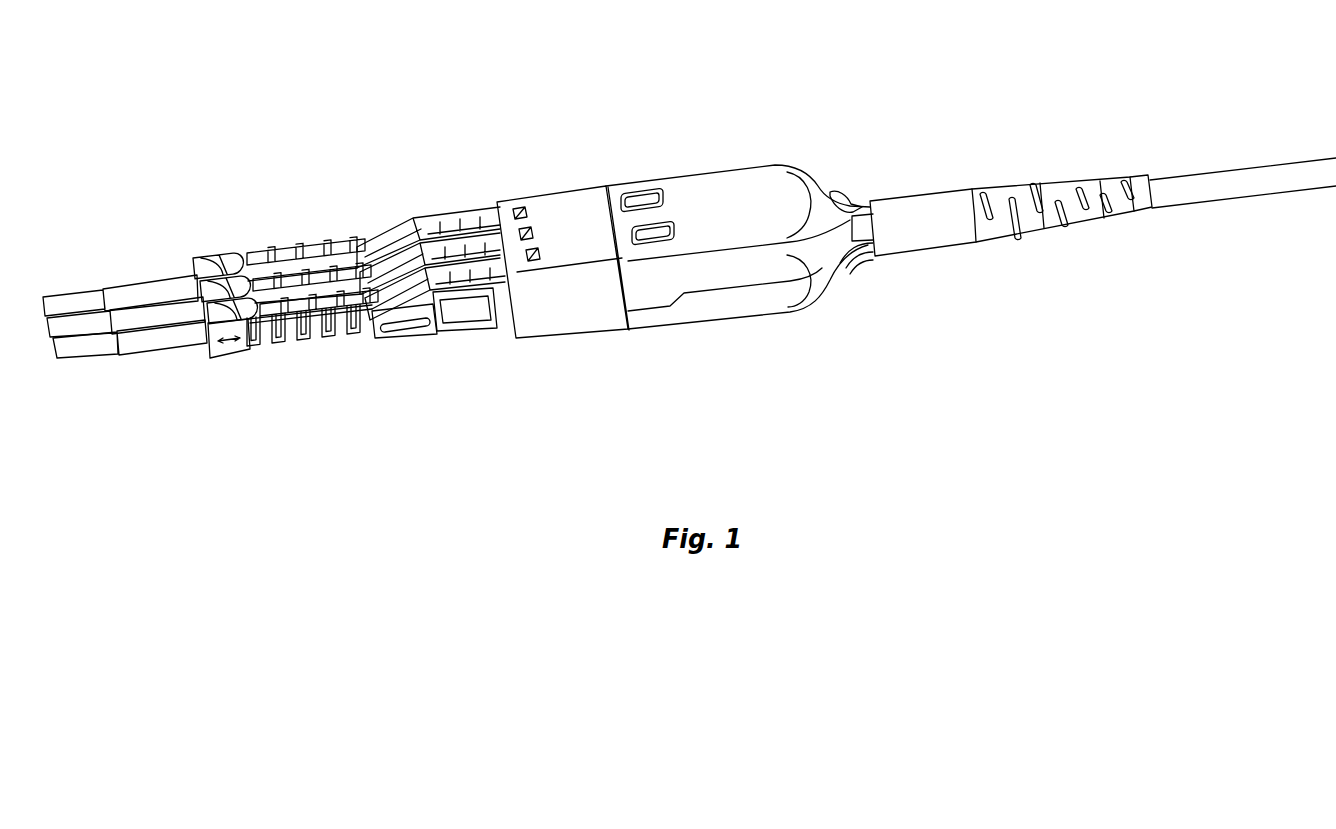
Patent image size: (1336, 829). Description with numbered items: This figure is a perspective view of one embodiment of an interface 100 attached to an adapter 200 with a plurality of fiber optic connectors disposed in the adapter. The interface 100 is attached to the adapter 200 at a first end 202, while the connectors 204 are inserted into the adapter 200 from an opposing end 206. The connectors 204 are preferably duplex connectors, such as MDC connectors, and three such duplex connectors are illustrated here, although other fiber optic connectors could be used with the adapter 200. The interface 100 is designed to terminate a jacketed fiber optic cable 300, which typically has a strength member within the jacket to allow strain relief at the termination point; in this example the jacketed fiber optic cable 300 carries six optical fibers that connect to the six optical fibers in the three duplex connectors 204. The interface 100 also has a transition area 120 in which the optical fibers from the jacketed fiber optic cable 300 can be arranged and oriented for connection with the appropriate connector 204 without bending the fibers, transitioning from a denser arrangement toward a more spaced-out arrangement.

The interface 100 is at (780, 98).
The transition area 120 is at (862, 286).
The adapter 200 is at (576, 326).
The first end 202 is at (626, 334).
The connectors 204 is at (427, 214).
The opposing end 206 is at (516, 340).
The jacketed fiber optic cable 300 is at (1254, 165).